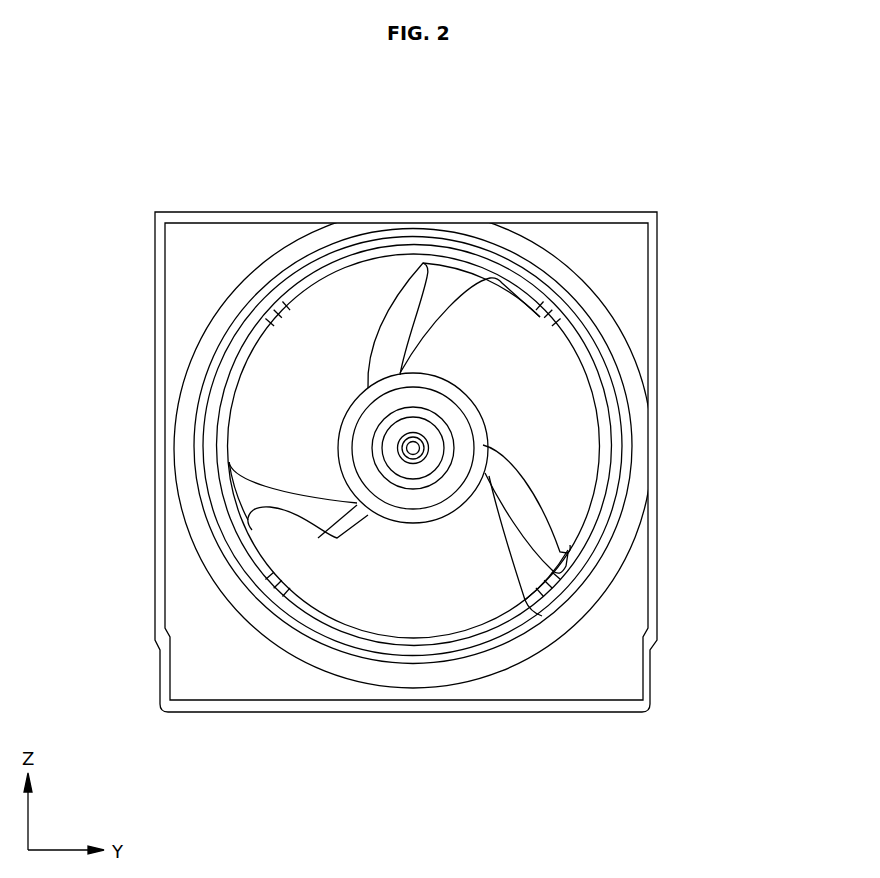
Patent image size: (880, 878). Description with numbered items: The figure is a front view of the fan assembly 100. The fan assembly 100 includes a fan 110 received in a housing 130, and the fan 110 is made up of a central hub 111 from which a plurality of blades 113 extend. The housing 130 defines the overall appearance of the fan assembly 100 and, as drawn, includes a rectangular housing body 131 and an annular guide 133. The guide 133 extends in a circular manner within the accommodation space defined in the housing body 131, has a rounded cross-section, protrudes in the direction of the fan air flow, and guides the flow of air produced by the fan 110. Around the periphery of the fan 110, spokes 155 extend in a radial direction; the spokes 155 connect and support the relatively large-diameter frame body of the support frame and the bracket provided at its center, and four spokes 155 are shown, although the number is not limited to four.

The fan assembly 100 is at (212, 95).
The fan 110 is at (745, 393).
The hub 111 is at (458, 426).
The blades 113 is at (580, 467).
The housing 130 is at (745, 230).
The housing body 131 is at (613, 248).
The guide 133 is at (577, 323).
The spokes 155 is at (284, 302).